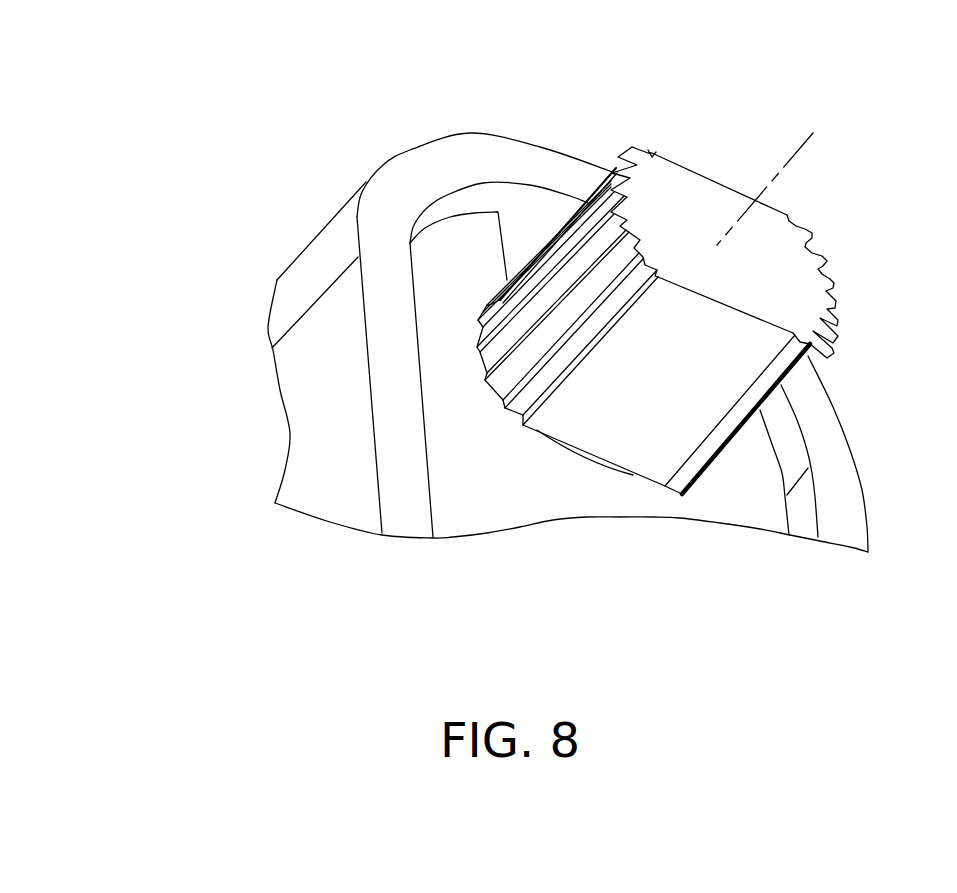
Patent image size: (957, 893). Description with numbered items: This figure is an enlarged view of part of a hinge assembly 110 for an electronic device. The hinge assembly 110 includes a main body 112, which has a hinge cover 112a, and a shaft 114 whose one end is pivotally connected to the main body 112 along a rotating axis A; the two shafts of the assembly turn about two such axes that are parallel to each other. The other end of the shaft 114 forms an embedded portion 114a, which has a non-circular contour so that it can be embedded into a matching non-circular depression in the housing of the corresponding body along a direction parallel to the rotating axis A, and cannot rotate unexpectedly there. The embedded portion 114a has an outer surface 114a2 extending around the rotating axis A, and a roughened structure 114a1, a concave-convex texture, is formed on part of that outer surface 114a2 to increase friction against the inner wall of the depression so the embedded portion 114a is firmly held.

The hinge assembly 110 is at (315, 170).
The main body 112 is at (485, 160).
The hinge cover 112a is at (485, 160).
The shaft 114 is at (717, 193).
The embedded portion 114a is at (717, 193).
The roughened structure 114a1 is at (608, 199).
The outer surface 114a2 is at (617, 220).
The rotating axis A is at (813, 143).